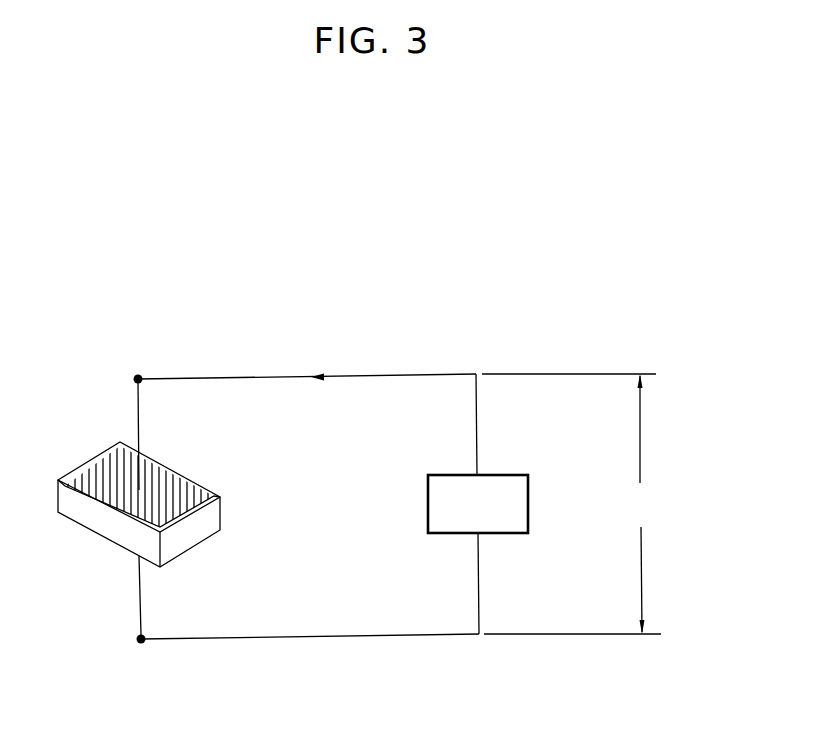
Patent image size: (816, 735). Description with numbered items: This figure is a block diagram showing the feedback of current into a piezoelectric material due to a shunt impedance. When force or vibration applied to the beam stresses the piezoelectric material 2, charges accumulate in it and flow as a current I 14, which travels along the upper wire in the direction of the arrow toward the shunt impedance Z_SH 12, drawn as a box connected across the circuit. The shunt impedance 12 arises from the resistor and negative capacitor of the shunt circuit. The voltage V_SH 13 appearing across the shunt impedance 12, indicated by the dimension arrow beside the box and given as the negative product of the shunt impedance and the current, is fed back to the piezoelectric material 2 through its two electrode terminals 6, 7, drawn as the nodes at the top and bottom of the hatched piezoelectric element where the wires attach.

The piezoelectric material 2 is at (95, 466).
The electrode terminal 6 is at (137, 374).
The electrode terminal 7 is at (139, 645).
The shunt impedance 12 is at (506, 473).
The voltage 13 is at (695, 480).
The current 14 is at (301, 320).